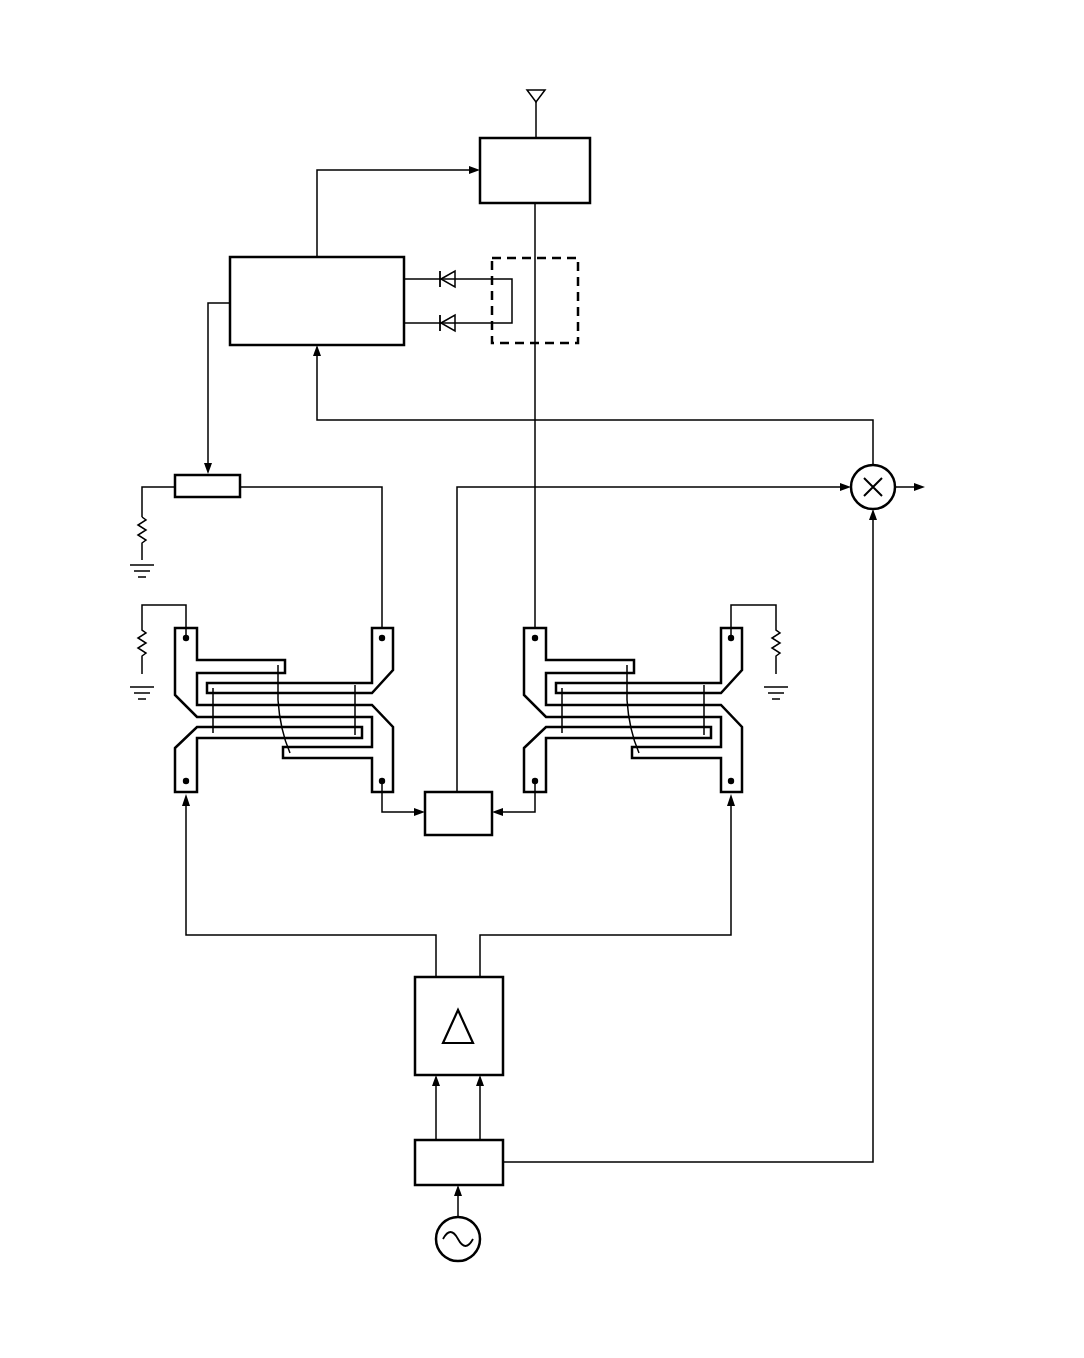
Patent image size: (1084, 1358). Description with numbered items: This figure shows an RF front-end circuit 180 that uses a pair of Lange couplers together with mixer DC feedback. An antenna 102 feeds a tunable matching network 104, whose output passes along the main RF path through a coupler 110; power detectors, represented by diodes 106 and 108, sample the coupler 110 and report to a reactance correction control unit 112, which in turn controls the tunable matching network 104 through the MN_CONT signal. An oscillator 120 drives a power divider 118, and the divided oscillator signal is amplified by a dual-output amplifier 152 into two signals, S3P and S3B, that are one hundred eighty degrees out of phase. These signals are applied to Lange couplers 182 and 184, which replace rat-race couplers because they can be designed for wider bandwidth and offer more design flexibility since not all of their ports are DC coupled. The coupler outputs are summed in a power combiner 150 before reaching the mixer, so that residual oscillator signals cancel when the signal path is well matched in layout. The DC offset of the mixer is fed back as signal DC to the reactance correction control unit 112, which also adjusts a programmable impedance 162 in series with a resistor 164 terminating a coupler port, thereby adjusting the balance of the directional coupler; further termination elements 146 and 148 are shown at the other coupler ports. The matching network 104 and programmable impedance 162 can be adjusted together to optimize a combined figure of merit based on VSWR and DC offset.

The receiver system 180 is at (357, 68).
The antenna 102 is at (545, 97).
The tunable matching network 104 is at (590, 166).
The diode 106 is at (443, 333).
The diode 108 is at (447, 270).
The coupler 110 is at (580, 303).
The reactance correction control unit 112 is at (273, 257).
The power divider 118 is at (415, 1162).
The oscillator 120 is at (450, 1262).
The termination resistor 146 is at (133, 650).
The termination resistor 148 is at (790, 650).
The power combiner 150 is at (452, 838).
The dual-output amplifier 152 is at (415, 1025).
The programmable impedance 162 is at (200, 500).
The resistor 164 is at (133, 530).
The Lange coupler 182 is at (245, 662).
The Lange coupler 184 is at (590, 738).